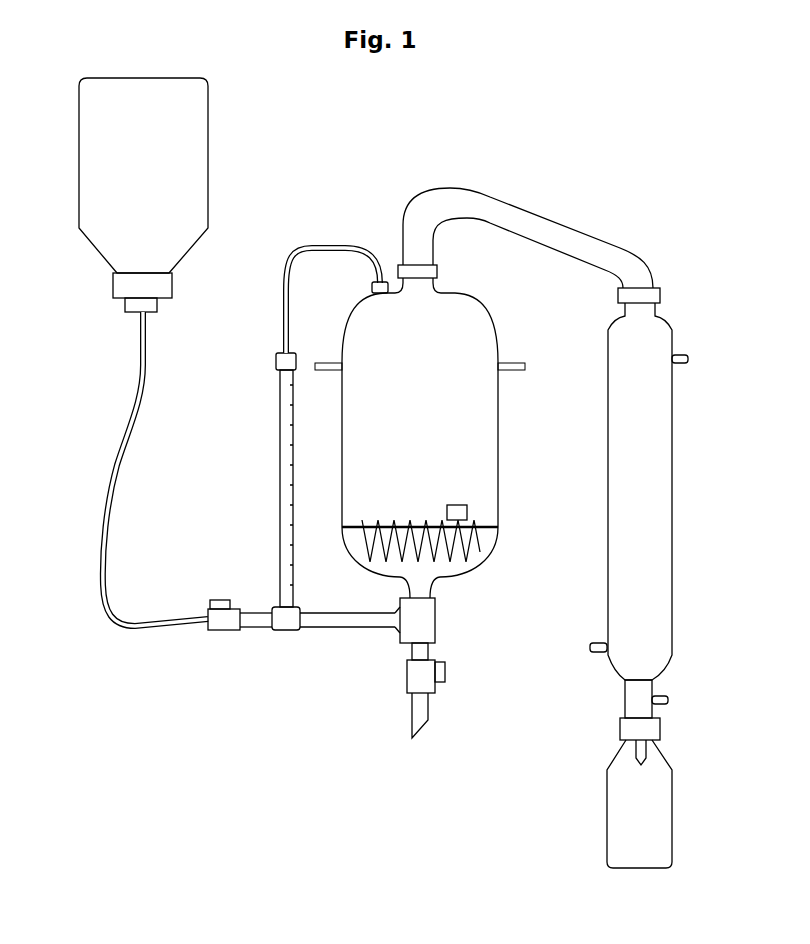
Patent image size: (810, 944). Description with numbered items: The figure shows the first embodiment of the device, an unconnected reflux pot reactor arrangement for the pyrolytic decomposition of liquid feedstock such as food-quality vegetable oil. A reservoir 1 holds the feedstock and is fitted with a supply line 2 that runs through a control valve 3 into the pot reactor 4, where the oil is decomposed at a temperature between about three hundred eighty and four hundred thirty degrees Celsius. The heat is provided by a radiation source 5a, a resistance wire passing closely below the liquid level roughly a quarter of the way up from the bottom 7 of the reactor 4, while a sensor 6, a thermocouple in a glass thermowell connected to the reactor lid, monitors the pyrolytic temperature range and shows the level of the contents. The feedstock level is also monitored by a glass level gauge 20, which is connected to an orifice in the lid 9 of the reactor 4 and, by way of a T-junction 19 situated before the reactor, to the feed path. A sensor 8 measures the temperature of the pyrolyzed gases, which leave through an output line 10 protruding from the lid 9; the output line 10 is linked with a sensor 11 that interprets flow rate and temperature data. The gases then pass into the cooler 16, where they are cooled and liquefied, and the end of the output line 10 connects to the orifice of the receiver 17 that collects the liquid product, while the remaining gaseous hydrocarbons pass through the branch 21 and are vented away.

The reservoir 1 is at (107, 130).
The supply line 2 is at (133, 417).
The control valve 3 is at (216, 628).
The pot reactor 4 is at (418, 470).
The radiation source 5a is at (430, 548).
The sensor 6 is at (467, 513).
The bottom 7 is at (402, 575).
The sensor 8 is at (422, 352).
The lid 9 is at (452, 292).
The output line 10 is at (428, 205).
The sensor 11 is at (452, 192).
The cooler 16 is at (652, 490).
The receiver 17 is at (648, 798).
The T-junction 19 is at (282, 629).
The level gauge 20 is at (283, 466).
The branch 21 is at (640, 700).